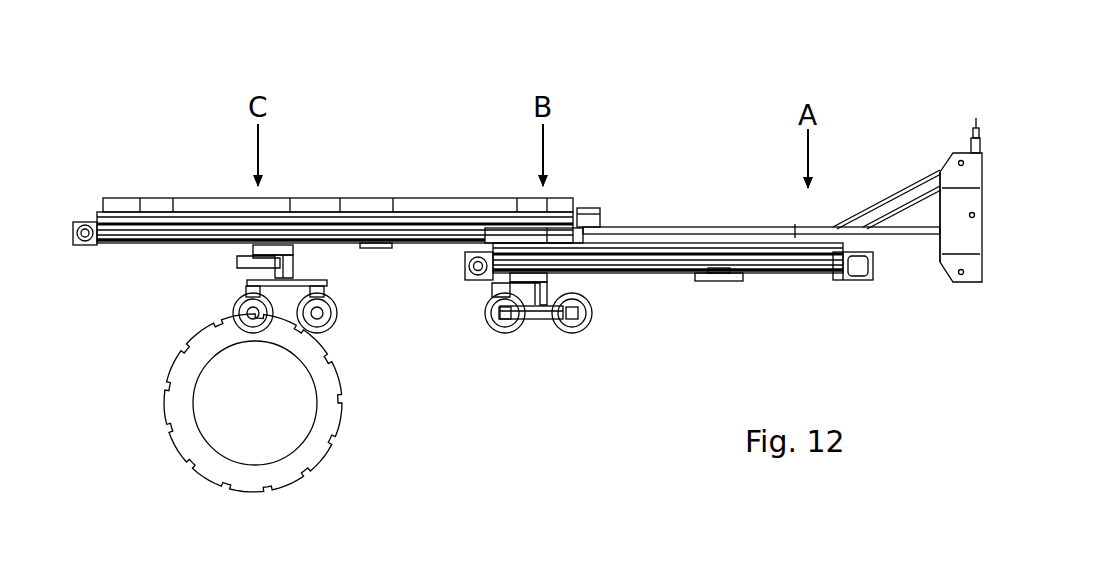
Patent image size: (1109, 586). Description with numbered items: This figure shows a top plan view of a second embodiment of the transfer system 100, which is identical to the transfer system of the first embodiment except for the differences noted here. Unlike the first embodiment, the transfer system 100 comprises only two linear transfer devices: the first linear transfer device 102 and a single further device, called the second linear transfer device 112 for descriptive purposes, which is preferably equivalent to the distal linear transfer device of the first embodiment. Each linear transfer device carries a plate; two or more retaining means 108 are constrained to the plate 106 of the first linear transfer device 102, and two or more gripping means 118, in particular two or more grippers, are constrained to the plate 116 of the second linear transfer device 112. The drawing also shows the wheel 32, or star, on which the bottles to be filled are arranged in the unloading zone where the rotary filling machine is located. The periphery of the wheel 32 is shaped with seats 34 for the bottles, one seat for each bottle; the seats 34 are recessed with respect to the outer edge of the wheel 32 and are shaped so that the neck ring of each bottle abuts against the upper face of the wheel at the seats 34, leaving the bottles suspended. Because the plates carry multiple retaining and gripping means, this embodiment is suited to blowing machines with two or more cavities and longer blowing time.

The transfer system 100 is at (652, 118).
The first linear transfer device 102 is at (716, 214).
The plate 106 is at (555, 322).
The retaining means 108 is at (505, 318).
The second linear transfer device 112 is at (388, 176).
The plate 116 is at (242, 284).
The gripping means 118 is at (318, 297).
The wheel 32 is at (287, 464).
The seats 34 is at (336, 431).